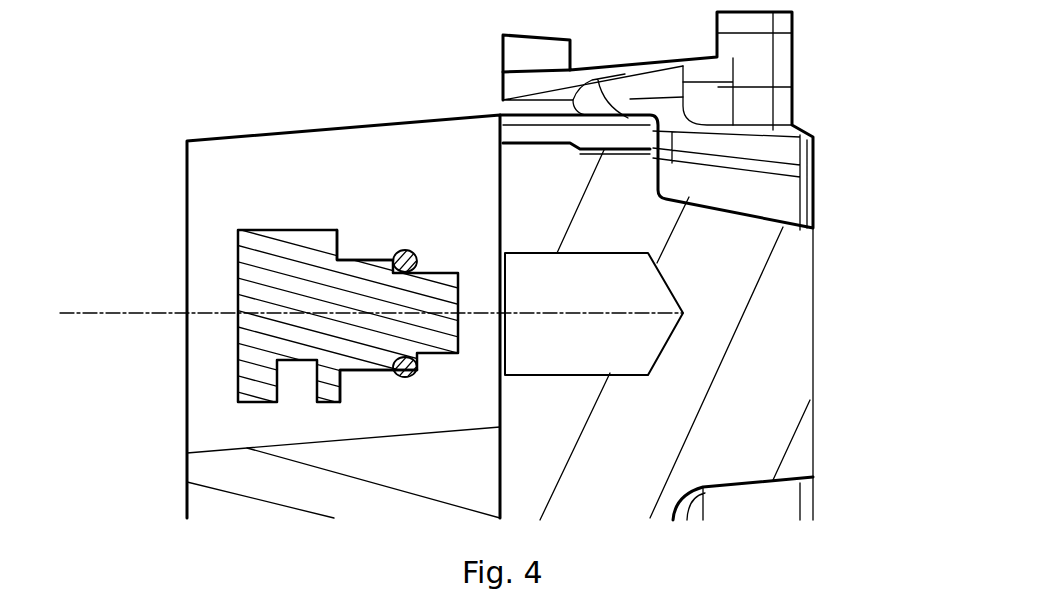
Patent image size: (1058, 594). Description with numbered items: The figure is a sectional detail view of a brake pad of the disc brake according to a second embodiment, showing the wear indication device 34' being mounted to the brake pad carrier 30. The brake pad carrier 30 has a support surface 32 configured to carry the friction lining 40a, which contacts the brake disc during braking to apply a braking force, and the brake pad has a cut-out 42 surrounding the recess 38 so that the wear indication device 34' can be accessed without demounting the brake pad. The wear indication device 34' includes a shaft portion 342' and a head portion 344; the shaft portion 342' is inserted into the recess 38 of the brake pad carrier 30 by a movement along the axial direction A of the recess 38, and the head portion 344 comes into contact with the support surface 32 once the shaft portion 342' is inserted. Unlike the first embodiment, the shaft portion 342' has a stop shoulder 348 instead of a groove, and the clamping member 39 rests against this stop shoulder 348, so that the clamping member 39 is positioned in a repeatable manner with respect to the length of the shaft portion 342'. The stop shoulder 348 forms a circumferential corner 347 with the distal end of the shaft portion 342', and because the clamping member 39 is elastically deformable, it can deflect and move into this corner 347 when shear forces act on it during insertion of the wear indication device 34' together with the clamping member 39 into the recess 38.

The brake pad carrier 30 is at (775, 378).
The support surface 32 is at (495, 203).
The wear indication device 34' is at (342, 236).
The recess 38 is at (637, 282).
The clamping member 39 is at (387, 379).
The friction lining 40a is at (196, 470).
The cut-out 42 is at (206, 389).
The shaft portion 342' is at (379, 164).
The head portion 344 is at (262, 273).
The circumferential corner 347 is at (392, 357).
The stop shoulder 348 is at (399, 248).
The axial direction A is at (150, 314).